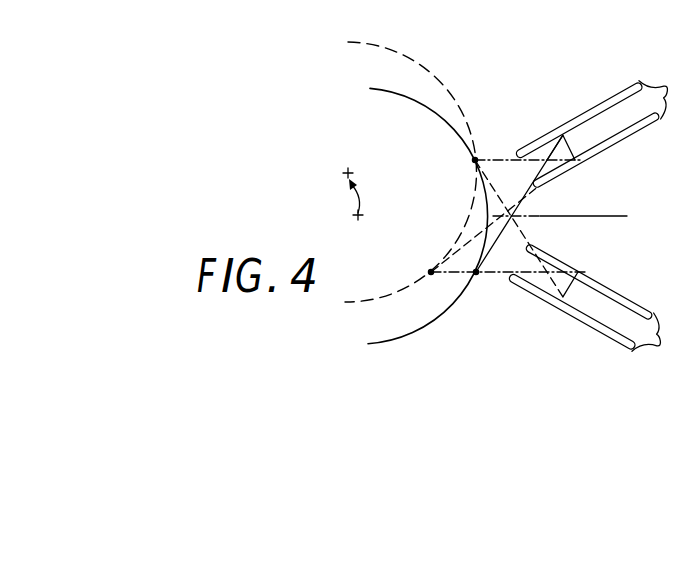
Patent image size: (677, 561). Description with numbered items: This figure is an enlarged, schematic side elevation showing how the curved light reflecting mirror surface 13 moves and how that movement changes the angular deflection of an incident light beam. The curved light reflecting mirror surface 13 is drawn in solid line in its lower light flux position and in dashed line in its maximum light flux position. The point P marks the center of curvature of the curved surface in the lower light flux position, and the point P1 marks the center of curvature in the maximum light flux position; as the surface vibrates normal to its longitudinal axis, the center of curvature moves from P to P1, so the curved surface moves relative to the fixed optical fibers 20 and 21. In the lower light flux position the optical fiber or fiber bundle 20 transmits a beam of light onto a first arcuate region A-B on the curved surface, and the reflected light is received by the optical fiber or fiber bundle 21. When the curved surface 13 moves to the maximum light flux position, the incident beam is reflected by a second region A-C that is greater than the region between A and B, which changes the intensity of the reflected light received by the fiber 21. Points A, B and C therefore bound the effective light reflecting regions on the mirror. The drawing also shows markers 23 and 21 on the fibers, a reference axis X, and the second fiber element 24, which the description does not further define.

The curved light reflecting mirror surface 13 is at (392, 48).
The optical fiber or fiber bundle 20 is at (621, 100).
The optical fiber or fiber bundle 21 is at (584, 286).
The marker on first tube 23 is at (592, 106).
The second guide tube 24 is at (637, 298).
The point A of effective light reflecting region A is at (475, 160).
The point B of first arcuate region B is at (476, 272).
The point C of second region C is at (431, 272).
The center of curvature in lower light flux position P is at (356, 220).
The center of curvature in maximum light flux position P1 is at (348, 170).
The axis X is at (580, 215).